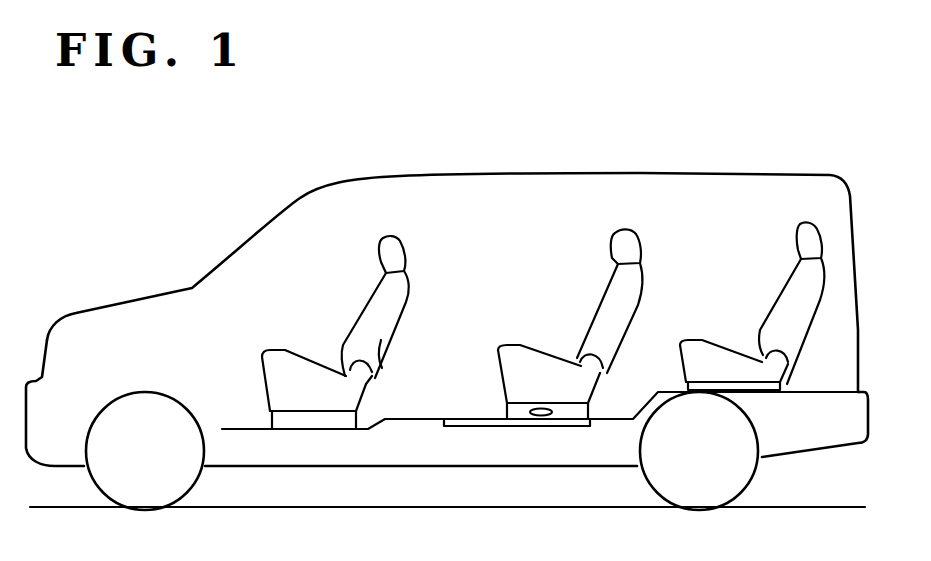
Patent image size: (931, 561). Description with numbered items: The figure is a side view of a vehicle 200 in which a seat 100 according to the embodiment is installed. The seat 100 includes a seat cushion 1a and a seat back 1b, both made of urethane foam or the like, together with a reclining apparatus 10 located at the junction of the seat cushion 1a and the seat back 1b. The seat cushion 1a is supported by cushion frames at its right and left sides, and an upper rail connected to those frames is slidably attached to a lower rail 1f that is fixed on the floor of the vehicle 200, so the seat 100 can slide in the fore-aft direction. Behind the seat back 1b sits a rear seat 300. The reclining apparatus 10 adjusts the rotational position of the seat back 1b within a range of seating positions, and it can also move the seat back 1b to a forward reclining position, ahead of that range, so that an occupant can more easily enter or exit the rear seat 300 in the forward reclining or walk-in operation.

The vehicle 200 is at (506, 163).
The seat for a vehicle 100 is at (548, 310).
The rear seat 300 is at (757, 287).
The seat cushion 1a is at (522, 345).
The seat back 1b is at (592, 305).
The lower rail 1f is at (553, 427).
The reclining apparatus 10 is at (607, 370).